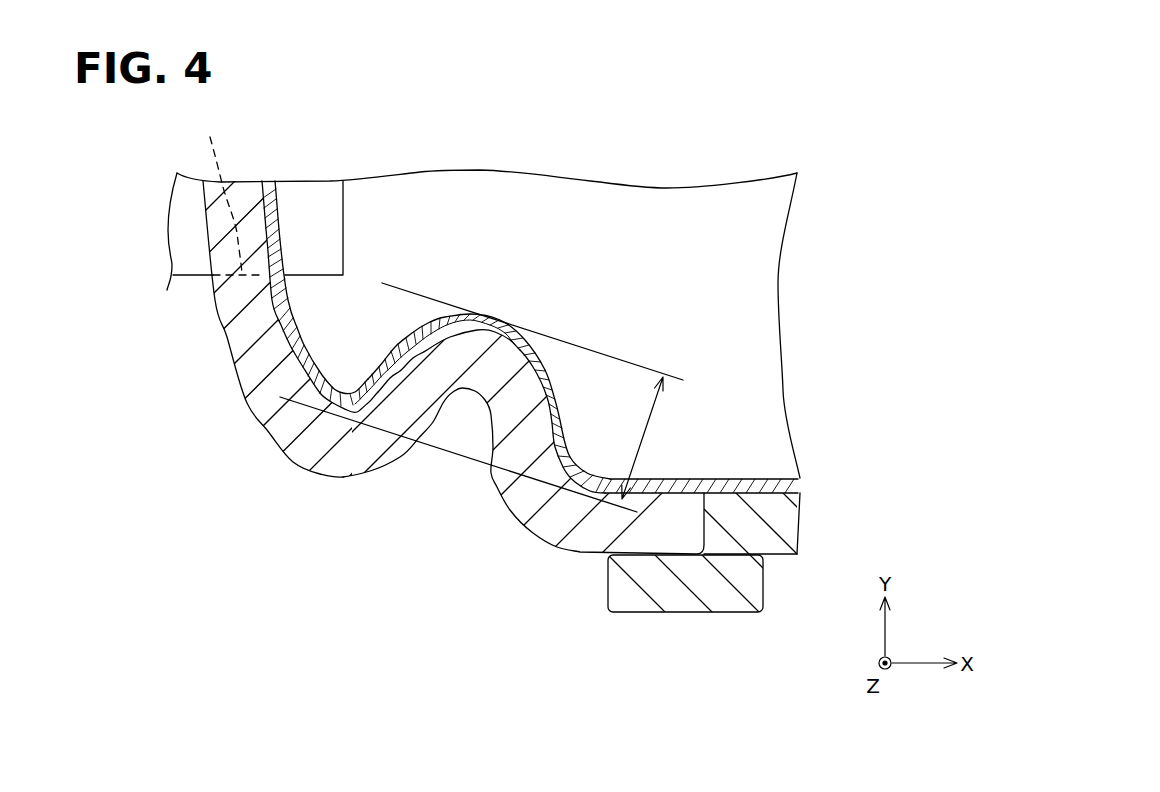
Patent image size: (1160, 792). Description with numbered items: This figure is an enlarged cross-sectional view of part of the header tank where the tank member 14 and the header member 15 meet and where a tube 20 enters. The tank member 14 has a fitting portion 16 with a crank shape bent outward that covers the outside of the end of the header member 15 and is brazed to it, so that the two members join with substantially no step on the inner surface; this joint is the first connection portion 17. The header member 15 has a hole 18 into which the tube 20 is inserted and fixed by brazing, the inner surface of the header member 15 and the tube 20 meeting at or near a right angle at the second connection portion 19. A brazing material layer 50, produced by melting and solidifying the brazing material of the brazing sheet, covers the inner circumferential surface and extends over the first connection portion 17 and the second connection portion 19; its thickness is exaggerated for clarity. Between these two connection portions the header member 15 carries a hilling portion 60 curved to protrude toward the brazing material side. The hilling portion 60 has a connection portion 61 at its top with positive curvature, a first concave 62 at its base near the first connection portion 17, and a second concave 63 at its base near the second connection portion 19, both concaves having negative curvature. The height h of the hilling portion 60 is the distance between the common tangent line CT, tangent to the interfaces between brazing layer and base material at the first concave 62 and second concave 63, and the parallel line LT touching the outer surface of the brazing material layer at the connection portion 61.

The tank member 14 is at (780, 527).
The header member 15 is at (267, 405).
The fitting portion 16 is at (672, 597).
The first connection portion 17 is at (705, 478).
The hole 18 is at (218, 192).
The second connection portion 19 is at (283, 208).
The tube 20 is at (190, 227).
The brazing material layer 50 is at (340, 297).
The hilling portion 60 is at (473, 370).
The connection portion 61 is at (474, 318).
The first concave 62 is at (584, 496).
The second concave 63 is at (335, 408).
The common tangent line CT is at (432, 450).
The line LT is at (550, 339).
The height of the hilling portion h is at (642, 438).